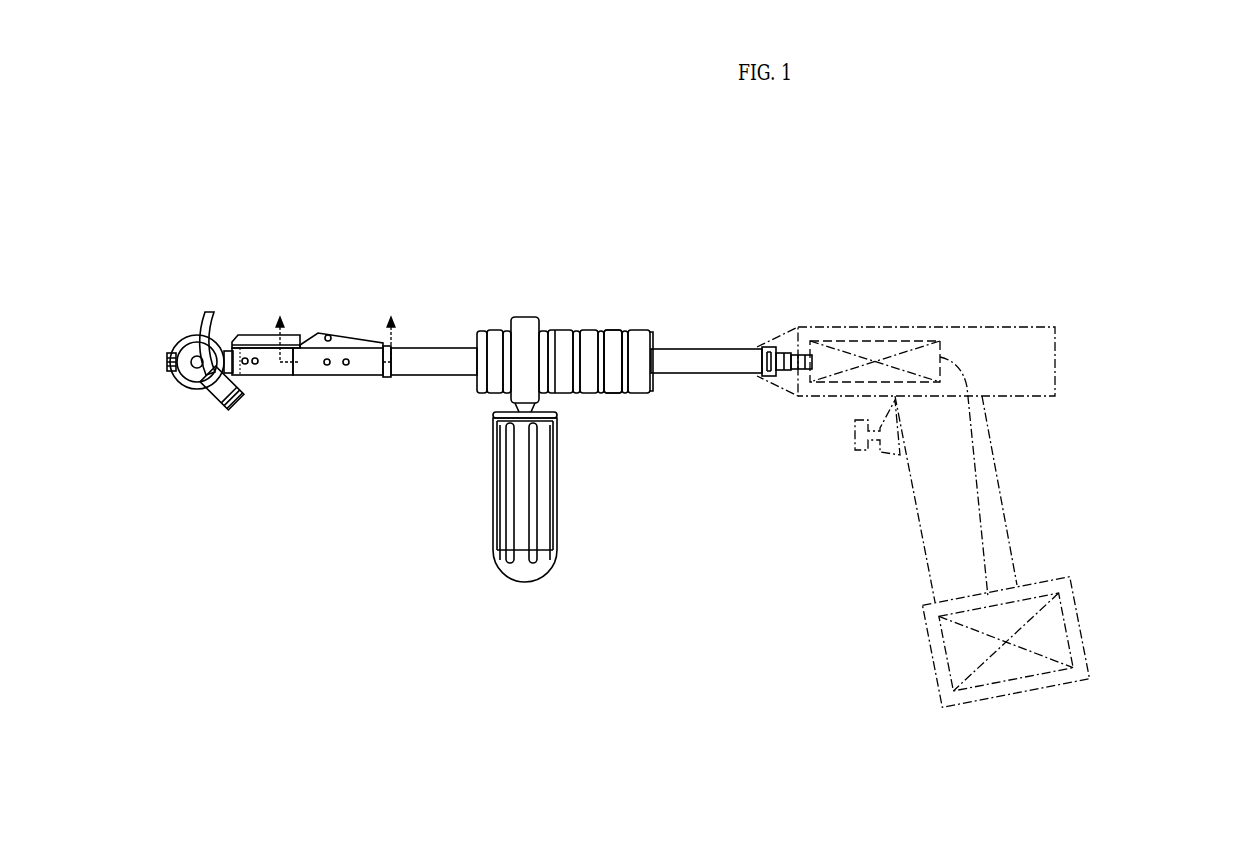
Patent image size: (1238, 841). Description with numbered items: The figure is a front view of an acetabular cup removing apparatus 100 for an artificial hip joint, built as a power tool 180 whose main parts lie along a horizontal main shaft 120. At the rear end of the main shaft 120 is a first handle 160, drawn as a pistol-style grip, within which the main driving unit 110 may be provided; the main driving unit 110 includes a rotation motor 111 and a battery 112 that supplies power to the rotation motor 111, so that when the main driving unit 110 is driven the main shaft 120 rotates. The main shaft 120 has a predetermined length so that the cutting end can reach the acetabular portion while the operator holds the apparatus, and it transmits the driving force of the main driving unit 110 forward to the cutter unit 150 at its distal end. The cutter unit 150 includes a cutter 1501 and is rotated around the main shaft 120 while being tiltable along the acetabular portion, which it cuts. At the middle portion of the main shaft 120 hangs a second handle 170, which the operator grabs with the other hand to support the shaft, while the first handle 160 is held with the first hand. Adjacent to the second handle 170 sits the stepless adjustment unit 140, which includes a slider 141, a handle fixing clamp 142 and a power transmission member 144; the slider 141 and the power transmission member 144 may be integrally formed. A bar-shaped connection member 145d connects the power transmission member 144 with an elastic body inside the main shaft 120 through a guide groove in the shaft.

The acetabular cup removing apparatus 100 is at (480, 270).
The main driving unit 110 is at (906, 361).
The rotation motor 111 is at (902, 341).
The battery 112 is at (1065, 622).
The main shaft 120 is at (268, 364).
The stepless adjustment unit 140 is at (566, 323).
The slider 141 is at (435, 347).
The handle fixing clamp 142 is at (612, 332).
The power transmission member 144 is at (328, 335).
The connection member 145d is at (346, 366).
The cutter unit 150 is at (178, 333).
The cutter 1501 is at (208, 312).
The first handle 160 is at (920, 526).
The second handle 170 is at (548, 492).
The power tool 180 is at (1021, 479).